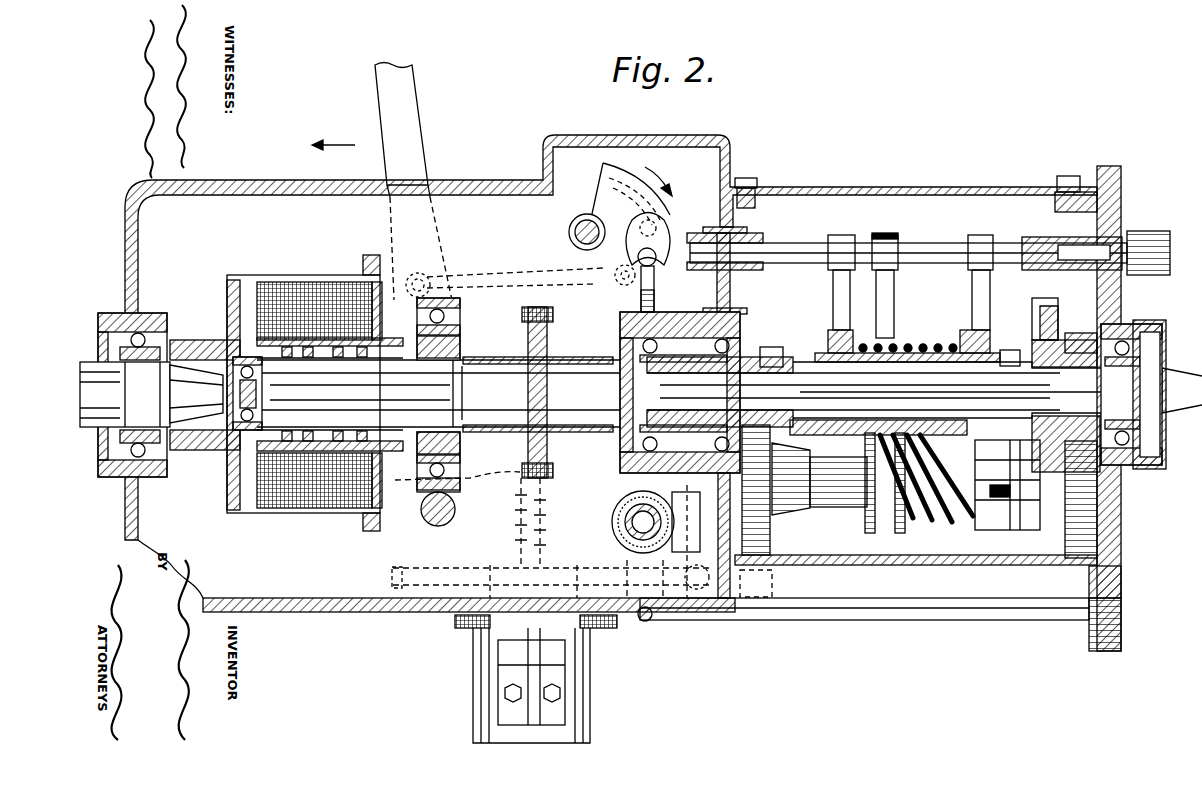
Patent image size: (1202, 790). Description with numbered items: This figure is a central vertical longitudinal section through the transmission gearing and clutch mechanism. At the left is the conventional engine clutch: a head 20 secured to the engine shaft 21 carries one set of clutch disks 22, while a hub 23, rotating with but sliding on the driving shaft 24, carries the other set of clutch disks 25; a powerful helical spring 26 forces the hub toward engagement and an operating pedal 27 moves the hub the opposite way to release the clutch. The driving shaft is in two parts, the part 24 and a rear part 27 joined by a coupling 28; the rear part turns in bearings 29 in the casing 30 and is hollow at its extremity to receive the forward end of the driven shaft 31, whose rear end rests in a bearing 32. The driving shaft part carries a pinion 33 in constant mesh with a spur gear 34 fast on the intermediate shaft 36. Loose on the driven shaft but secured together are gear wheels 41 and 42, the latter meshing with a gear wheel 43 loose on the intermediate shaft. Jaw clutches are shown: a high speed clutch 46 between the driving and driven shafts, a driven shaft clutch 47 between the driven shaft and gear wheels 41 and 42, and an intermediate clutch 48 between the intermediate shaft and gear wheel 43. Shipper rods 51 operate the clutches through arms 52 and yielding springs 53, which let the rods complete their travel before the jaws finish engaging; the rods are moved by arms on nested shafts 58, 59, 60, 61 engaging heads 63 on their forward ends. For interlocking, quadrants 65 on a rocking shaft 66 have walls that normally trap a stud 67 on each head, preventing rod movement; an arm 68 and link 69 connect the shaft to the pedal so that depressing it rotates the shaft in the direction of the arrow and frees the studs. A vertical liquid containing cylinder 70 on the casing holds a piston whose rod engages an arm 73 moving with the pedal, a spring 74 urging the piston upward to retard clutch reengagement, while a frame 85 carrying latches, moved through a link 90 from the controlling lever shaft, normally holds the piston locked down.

The head 20 is at (238, 278).
The engine shaft 21 is at (151, 395).
The clutch disks 22 is at (312, 280).
The hub 23 is at (392, 362).
The driving shaft 24 is at (330, 394).
The clutch disks 25 is at (255, 485).
The helical spring 26 is at (310, 358).
The operating pedal 27 is at (416, 121).
The coupling 28 is at (547, 322).
The bearings 29 is at (735, 338).
The casing 30 is at (733, 165).
The driven shaft 31 is at (800, 357).
The bearing 32 is at (1126, 340).
The pinion 33 is at (762, 357).
The spur gear 34 is at (770, 545).
The intermediate shaft 36 is at (840, 497).
The gear wheel 41 is at (1045, 300).
The gear wheel 42 is at (1078, 334).
The gear wheel 43 is at (1066, 530).
The high speed clutch 46 is at (805, 434).
The driven shaft clutch 47 is at (1008, 352).
The intermediate clutch 48 is at (1015, 510).
The shipper rods 51 is at (940, 266).
The arms 52 is at (832, 292).
The yielding springs 53 is at (910, 350).
The nested shaft 58 is at (626, 532).
The nested shaft 59 is at (632, 540).
The nested shaft 60 is at (619, 521).
The nested shaft 61 is at (614, 512).
The heads 63 is at (658, 268).
The quadrants 65 is at (632, 189).
The rocking shaft 66 is at (572, 226).
The stud 67 is at (662, 228).
The arm 68 is at (600, 270).
The link 69 is at (484, 278).
The liquid containing cylinder 70 is at (590, 680).
The arm 73 is at (470, 477).
The spring 74 is at (510, 508).
The frame 85 is at (420, 578).
The link 90 is at (690, 618).